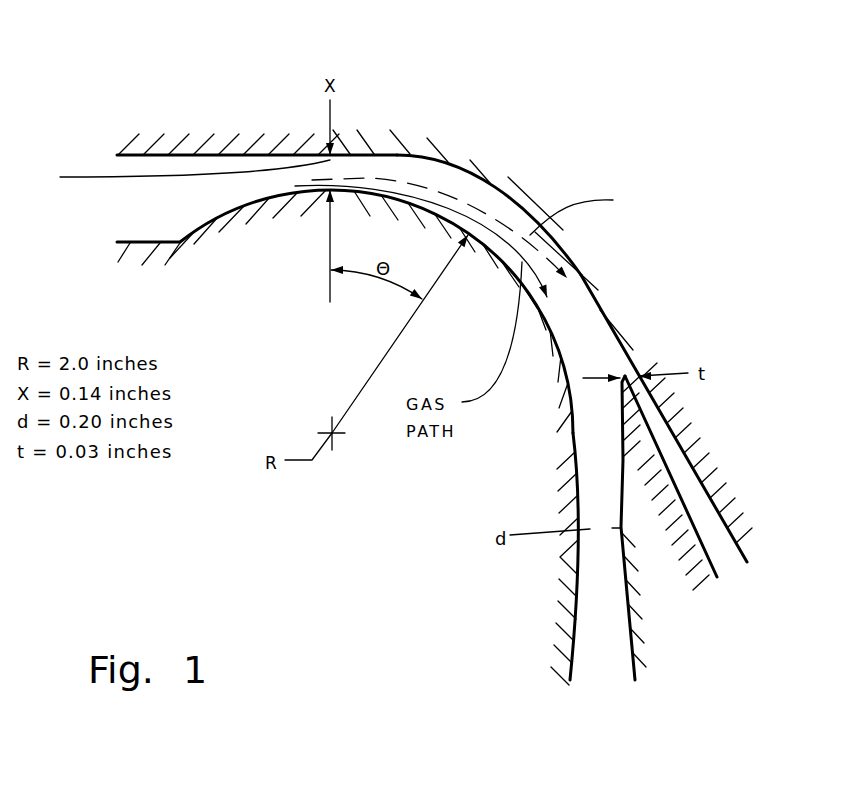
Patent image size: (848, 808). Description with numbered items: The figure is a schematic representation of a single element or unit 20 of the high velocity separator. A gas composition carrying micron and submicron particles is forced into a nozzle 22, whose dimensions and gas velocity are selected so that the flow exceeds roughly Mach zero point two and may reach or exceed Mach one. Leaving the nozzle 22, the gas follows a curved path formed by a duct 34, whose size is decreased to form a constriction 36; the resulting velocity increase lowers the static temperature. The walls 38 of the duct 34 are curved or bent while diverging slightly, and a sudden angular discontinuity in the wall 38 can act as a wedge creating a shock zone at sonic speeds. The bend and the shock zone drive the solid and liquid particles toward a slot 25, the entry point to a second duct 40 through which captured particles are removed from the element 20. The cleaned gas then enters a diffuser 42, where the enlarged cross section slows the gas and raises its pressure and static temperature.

The separator element 20 is at (288, 118).
The nozzle 22 is at (183, 198).
The slot 25 is at (628, 365).
The duct 34 is at (498, 213).
The constriction 36 is at (179, 174).
The wall 38 is at (398, 152).
The second duct 40 is at (707, 526).
The diffuser 42 is at (598, 658).